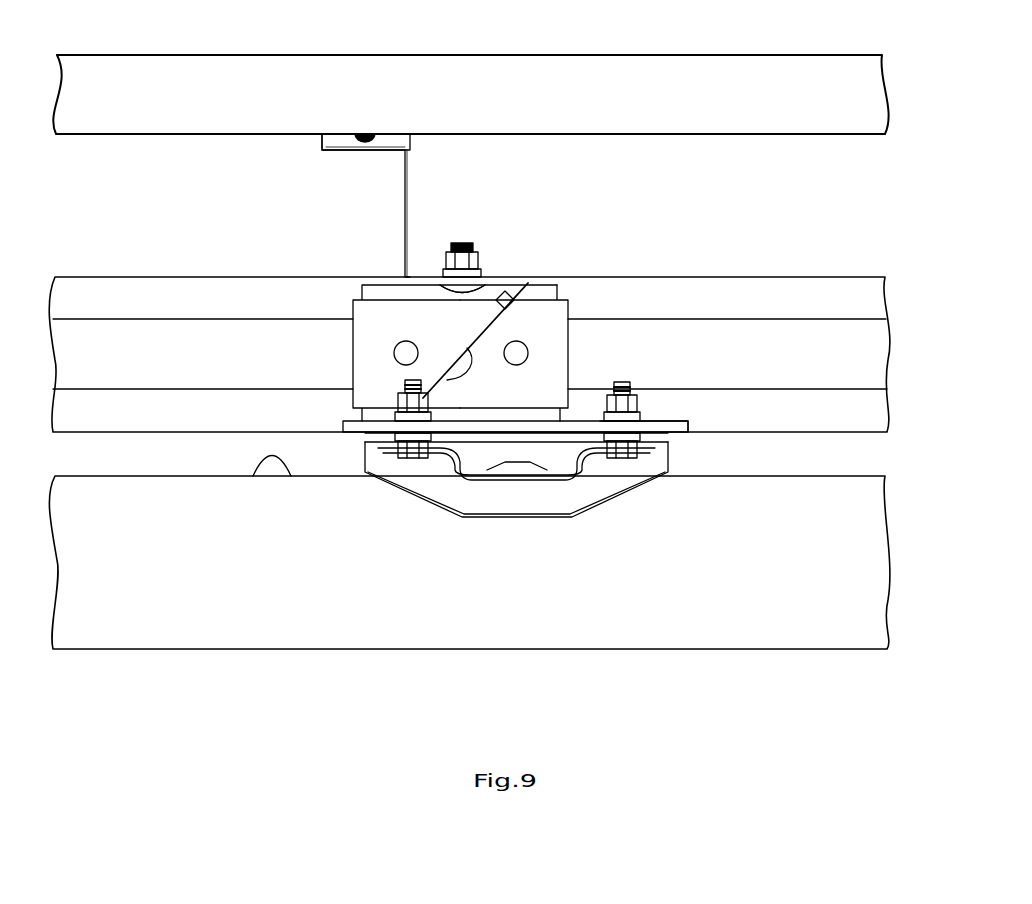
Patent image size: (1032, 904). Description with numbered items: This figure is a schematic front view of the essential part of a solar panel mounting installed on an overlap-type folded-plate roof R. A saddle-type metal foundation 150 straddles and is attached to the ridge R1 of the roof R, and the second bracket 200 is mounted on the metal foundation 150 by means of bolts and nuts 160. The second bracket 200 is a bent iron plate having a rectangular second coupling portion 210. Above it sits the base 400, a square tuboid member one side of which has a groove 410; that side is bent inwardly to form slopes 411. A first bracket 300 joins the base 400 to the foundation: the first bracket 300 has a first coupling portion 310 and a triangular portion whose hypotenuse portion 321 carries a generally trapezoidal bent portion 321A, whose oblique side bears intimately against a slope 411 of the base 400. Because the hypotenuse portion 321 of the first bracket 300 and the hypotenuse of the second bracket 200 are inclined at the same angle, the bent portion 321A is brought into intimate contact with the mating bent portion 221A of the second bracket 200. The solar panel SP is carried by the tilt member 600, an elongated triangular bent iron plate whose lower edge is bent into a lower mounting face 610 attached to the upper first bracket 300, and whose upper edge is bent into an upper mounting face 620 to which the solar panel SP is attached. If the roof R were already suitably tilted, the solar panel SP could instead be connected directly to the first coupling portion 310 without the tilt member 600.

The solar panel SP is at (455, 85).
The tilt member 600 is at (410, 173).
The upper mounting face 620 is at (356, 150).
The base 400 is at (240, 277).
The groove 410 is at (149, 391).
The slope 411 is at (96, 296).
The first bracket 300 is at (352, 345).
The first coupling portion 310 is at (543, 290).
The hypotenuse portion 321 is at (518, 277).
The bent portion 321A is at (438, 378).
The bent portion 221A is at (466, 342).
The lower mounting face 610 is at (491, 275).
The second bracket 200 is at (572, 345).
The second coupling portion 210 is at (679, 427).
The bolts and nuts 160 is at (634, 392).
The metal foundation 150 is at (452, 490).
The folded-plate roof R is at (164, 630).
The ridge R1 is at (253, 476).